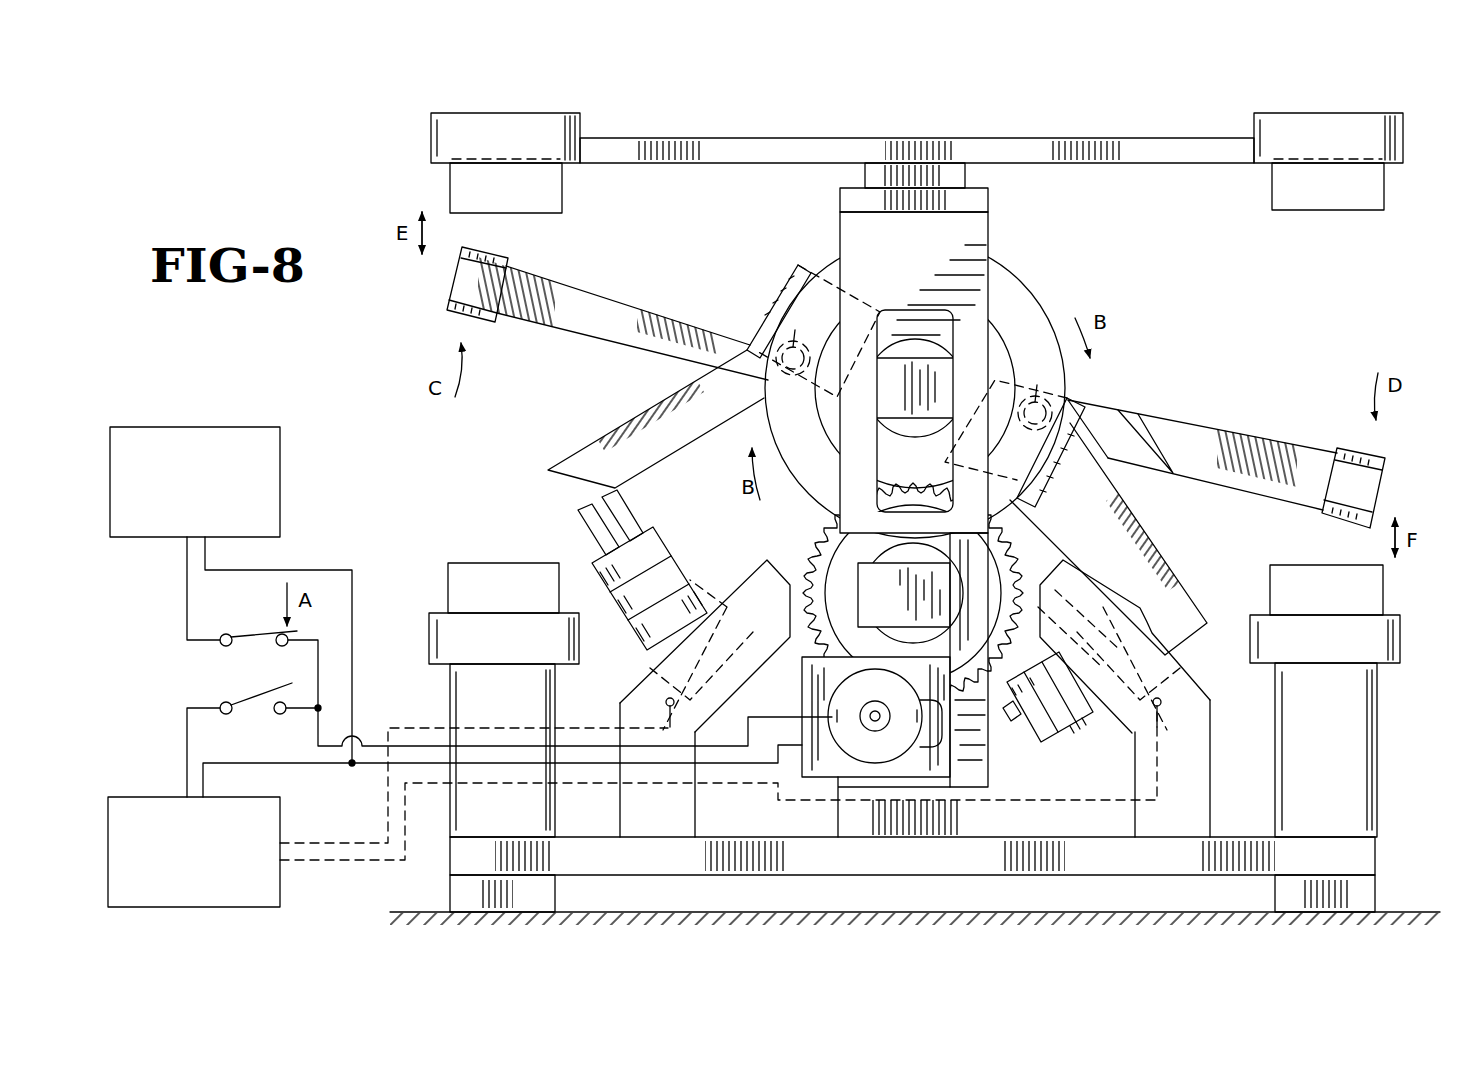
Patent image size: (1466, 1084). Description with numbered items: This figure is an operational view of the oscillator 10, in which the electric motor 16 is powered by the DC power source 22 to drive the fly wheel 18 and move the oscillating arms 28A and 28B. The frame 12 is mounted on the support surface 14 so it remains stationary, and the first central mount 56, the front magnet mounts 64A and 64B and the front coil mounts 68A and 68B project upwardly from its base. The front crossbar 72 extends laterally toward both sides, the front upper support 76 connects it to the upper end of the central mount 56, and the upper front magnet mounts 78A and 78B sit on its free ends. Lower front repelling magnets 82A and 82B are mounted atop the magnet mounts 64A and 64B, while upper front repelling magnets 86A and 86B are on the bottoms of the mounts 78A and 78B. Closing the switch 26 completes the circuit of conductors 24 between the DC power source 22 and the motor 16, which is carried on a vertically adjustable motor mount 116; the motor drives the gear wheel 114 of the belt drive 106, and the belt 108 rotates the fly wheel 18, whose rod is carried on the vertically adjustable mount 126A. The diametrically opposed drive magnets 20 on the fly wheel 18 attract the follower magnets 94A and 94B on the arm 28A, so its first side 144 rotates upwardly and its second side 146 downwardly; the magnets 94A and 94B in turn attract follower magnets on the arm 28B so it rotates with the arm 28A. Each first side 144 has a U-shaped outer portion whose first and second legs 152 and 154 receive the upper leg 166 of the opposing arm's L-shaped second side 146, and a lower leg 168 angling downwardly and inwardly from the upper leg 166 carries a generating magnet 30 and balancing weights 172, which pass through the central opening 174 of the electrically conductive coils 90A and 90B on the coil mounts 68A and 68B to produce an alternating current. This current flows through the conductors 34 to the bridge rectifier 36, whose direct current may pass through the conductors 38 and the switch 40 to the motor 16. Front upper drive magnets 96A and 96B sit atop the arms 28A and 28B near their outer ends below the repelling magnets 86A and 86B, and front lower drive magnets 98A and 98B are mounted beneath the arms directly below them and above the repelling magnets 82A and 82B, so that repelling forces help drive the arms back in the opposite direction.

The oscillator 10 is at (320, 186).
The frame 12 is at (1382, 853).
The support surface 14 is at (1395, 908).
The electric motor 16 is at (935, 712).
The fly wheel 18 is at (818, 268).
The drive magnets 20 is at (790, 280).
The DC power source 22 is at (185, 427).
The conductors 24 is at (330, 572).
The switch 26 is at (260, 633).
The oscillating arm 28A is at (903, 328).
The oscillating arm 28B is at (1202, 427).
The generating magnets 30 is at (849, 633).
The conductors 34 is at (330, 843).
The bridge rectifier 36 is at (185, 907).
The conductors 38 is at (187, 742).
The switch 40 is at (250, 698).
The first central mount 56 is at (985, 250).
The first front magnet mount 64A is at (480, 680).
The second front magnet mount 64B is at (1355, 703).
The first front coil mount 68A is at (683, 810).
The second front coil mount 68B is at (1140, 818).
The front crossbar 72 is at (745, 136).
The front upper support 76 is at (985, 212).
The upper front magnet mount 78A is at (468, 125).
The upper front magnet mount 78B is at (1350, 128).
The lower front repelling magnet 82A is at (510, 580).
The lower front repelling magnet 82B is at (1370, 600).
The upper front repelling magnet 86A is at (466, 190).
The upper front repelling magnet 86B is at (1333, 185).
The first front electrically conductive coil 90A is at (640, 683).
The second front electrically conductive coil 90B is at (1190, 690).
The follower magnet 94A is at (772, 323).
The follower magnet 94B is at (1060, 395).
The front upper drive magnet 96A is at (505, 258).
The front upper drive magnet 96B is at (1390, 455).
The front lower drive magnet 98A is at (446, 325).
The front lower drive magnet 98B is at (1330, 520).
The belt drive 106 is at (990, 537).
The belt 108 is at (1005, 541).
The gear wheel 114 is at (812, 562).
The motor mount 116 is at (875, 778).
The vertically adjustable mount 126A is at (930, 365).
The first side 144 is at (536, 326).
The second side 146 is at (888, 502).
The first leg 152 is at (655, 312).
The second leg 154 is at (1267, 450).
The upper leg 166 is at (673, 440).
The lower leg 168 is at (630, 512).
The balancing weights 172 is at (670, 546).
The central opening 174 is at (740, 636).